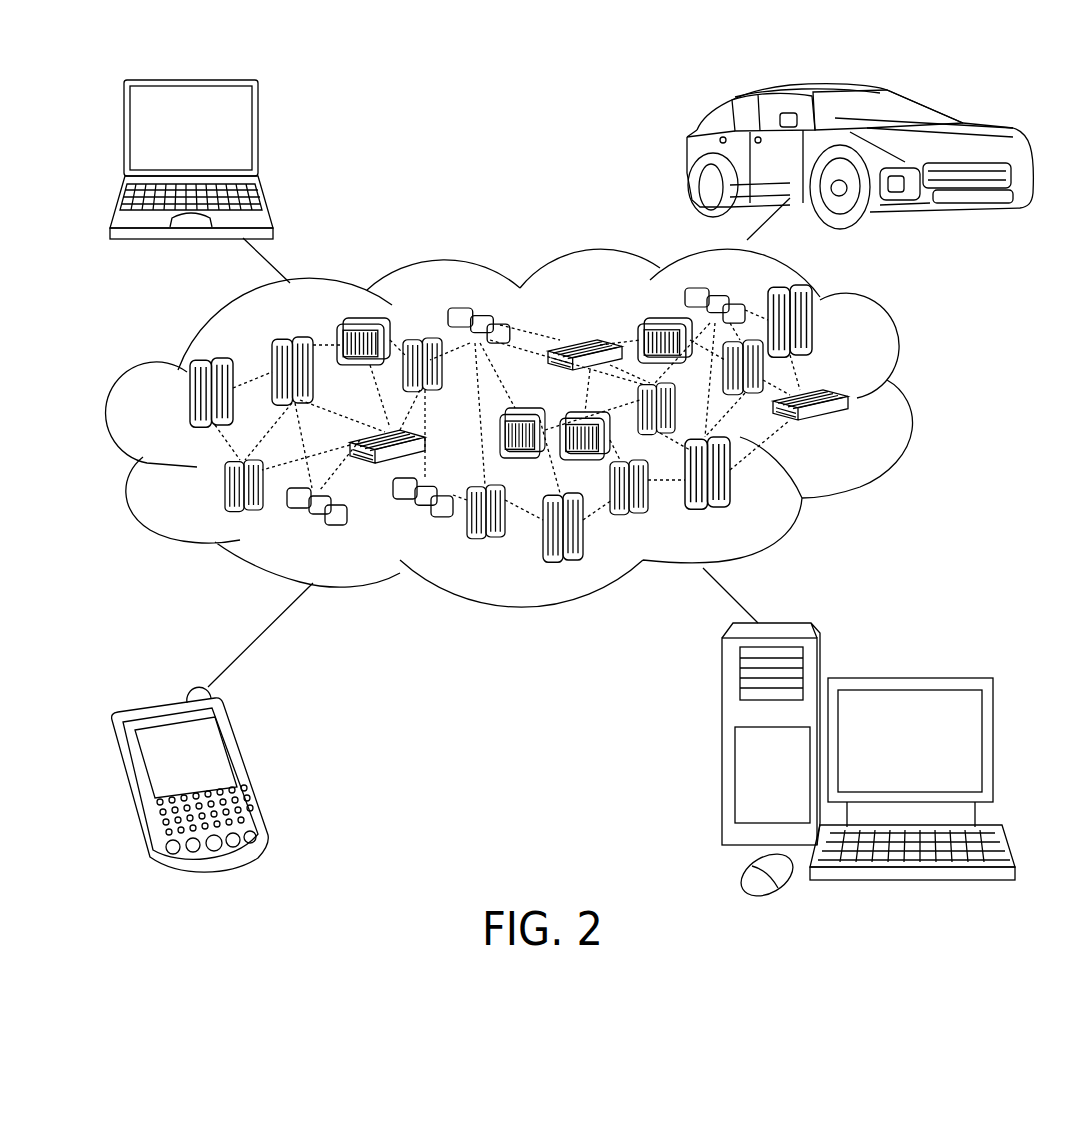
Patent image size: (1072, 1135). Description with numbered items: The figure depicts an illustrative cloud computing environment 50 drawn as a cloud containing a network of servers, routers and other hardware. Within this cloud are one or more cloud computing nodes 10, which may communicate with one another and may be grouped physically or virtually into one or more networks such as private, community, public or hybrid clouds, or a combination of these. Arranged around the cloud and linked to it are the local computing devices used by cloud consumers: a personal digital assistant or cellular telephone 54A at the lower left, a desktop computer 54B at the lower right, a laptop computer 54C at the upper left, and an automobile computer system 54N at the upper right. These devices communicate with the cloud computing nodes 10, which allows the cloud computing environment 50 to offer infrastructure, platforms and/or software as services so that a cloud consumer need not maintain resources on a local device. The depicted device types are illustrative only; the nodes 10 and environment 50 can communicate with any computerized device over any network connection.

The cloud computing node 10 is at (848, 430).
The cloud computing environment 50 is at (910, 397).
The personal digital assistant or cellular telephone 54A is at (247, 767).
The desktop computer 54B is at (910, 678).
The laptop computer 54C is at (260, 142).
The automobile computer system 54N is at (692, 155).